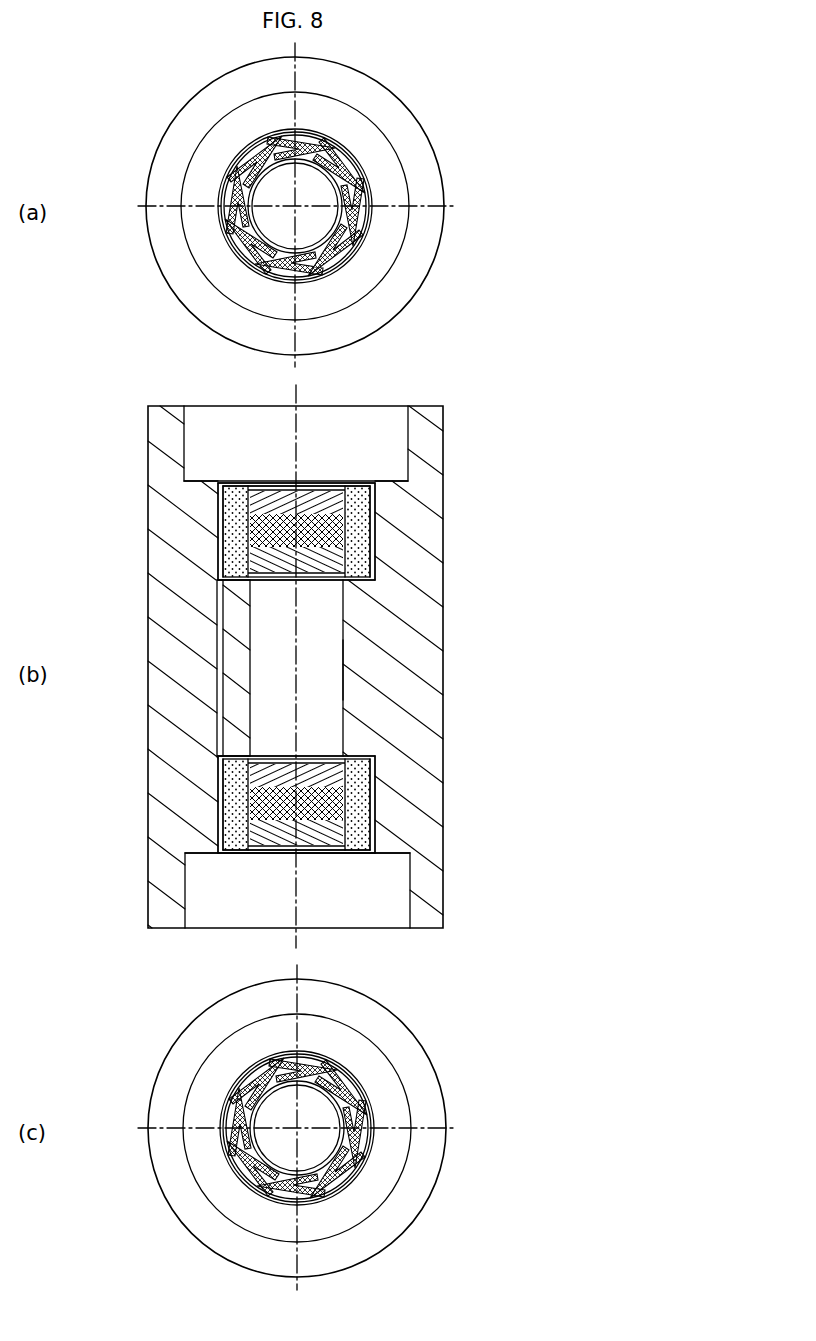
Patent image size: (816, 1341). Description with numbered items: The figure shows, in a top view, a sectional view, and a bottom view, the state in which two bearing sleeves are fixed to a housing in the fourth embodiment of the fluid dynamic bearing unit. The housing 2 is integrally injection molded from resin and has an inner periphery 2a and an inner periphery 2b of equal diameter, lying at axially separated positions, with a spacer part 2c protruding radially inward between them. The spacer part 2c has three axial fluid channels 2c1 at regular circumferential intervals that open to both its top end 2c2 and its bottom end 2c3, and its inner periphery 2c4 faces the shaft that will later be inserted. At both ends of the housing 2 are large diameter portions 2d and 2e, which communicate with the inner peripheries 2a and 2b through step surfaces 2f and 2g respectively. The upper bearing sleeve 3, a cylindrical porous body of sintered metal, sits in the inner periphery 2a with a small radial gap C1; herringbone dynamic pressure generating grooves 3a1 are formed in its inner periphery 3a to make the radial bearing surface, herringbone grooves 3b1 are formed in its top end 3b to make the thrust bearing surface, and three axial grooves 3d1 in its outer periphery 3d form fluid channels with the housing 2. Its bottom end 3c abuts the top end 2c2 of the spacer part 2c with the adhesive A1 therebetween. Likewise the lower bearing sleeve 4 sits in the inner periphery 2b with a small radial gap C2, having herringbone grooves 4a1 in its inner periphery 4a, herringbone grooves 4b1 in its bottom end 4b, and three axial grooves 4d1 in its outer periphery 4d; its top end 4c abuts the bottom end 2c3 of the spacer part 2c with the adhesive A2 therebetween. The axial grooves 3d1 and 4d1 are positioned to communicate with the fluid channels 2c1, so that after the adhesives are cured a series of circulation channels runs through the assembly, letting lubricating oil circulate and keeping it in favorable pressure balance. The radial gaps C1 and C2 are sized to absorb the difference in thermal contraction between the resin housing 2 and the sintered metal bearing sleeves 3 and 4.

The housing 2 is at (368, 75).
The inner periphery 2a is at (230, 250).
The inner periphery 2b is at (243, 1190).
The spacer part 2c is at (236, 640).
The fluid channel 2c1 is at (223, 682).
The top end 2c2 is at (225, 564).
The bottom end 2c3 is at (225, 778).
The inner periphery 2c4 is at (347, 686).
The large diameter portion 2d is at (242, 108).
The large diameter portion 2e is at (411, 890).
The step surface 2f is at (180, 132).
The step surface 2g is at (406, 866).
The bearing sleeve 3 is at (300, 353).
The inner periphery 3a is at (308, 158).
The dynamic pressure generating groove 3a1 is at (300, 484).
The top end 3b is at (363, 172).
The dynamic pressure generating groove 3b1 is at (367, 186).
The bottom end 3c is at (225, 588).
The outer periphery 3d is at (218, 228).
The axial groove 3d1 is at (218, 205).
The bearing sleeve 4 is at (300, 968).
The inner periphery 4a is at (323, 772).
The dynamic pressure generating groove 4a1 is at (322, 847).
The bottom end 4b is at (233, 855).
The dynamic pressure generating groove 4b1 is at (369, 1110).
The top end 4c is at (228, 753).
The outer periphery 4d is at (220, 840).
The axial groove 4d1 is at (220, 805).
The adhesive A1 is at (368, 573).
The adhesive A2 is at (365, 757).
The radial gap C1 is at (377, 530).
The radial gap C2 is at (377, 820).